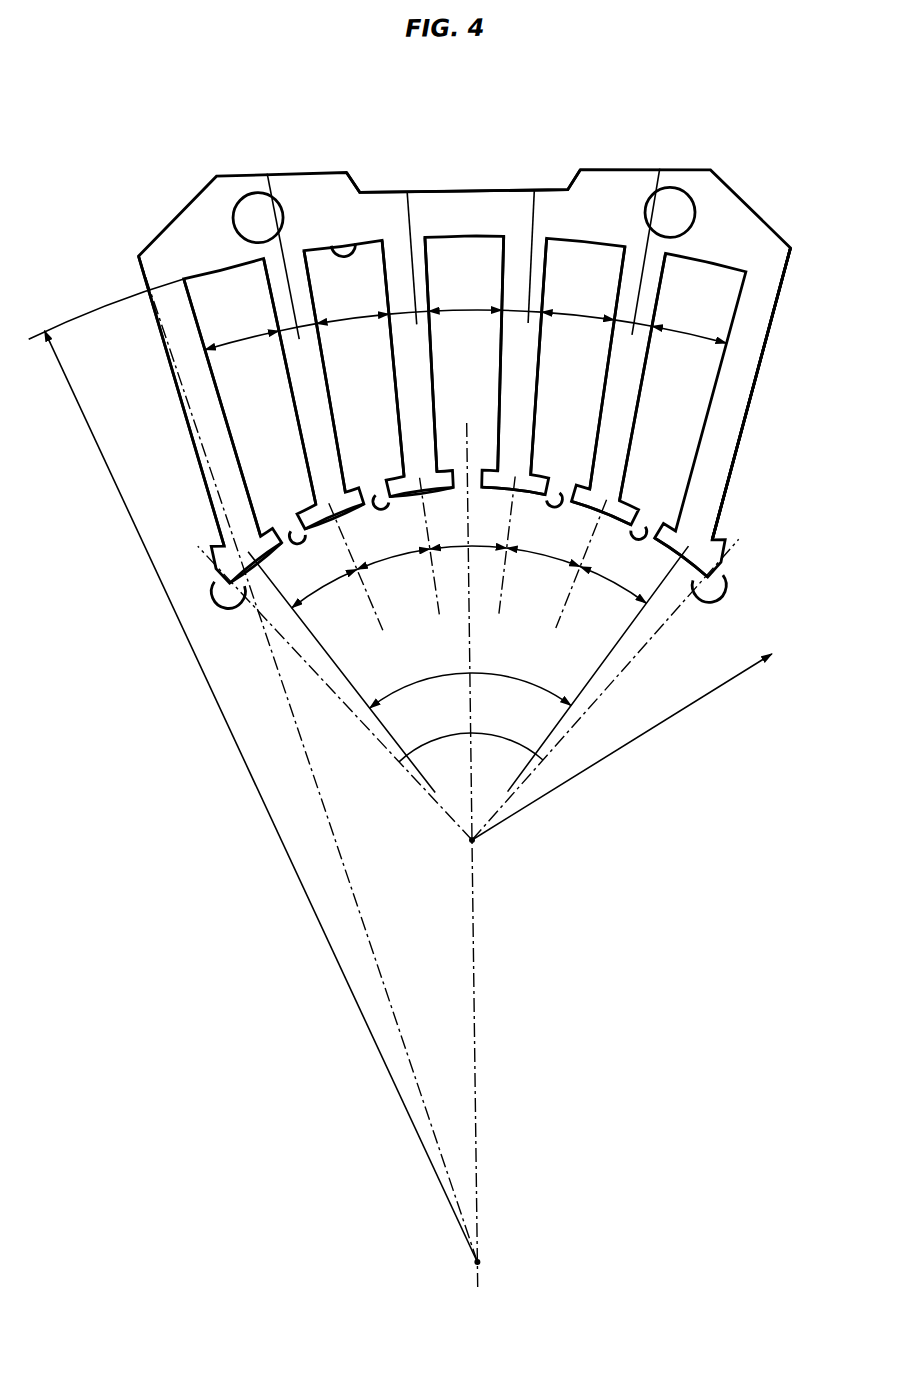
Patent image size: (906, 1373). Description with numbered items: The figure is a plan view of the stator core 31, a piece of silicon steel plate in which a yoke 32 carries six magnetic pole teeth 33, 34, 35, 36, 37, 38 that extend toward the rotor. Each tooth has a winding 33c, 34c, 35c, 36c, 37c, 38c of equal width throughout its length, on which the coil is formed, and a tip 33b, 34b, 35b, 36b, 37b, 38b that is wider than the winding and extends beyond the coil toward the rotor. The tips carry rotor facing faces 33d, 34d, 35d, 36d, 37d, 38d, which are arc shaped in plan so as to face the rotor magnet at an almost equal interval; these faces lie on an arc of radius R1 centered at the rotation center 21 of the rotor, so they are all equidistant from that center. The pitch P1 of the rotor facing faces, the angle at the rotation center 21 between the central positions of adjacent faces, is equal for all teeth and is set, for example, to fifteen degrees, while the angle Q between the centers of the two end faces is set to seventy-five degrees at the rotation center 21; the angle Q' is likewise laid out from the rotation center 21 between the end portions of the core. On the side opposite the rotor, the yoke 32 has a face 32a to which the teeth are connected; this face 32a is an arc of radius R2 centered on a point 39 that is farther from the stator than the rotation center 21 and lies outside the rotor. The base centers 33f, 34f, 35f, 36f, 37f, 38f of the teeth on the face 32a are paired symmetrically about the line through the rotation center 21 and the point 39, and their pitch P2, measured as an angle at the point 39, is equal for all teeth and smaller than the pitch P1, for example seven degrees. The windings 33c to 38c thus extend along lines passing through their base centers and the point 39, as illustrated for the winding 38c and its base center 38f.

The stator core 31 is at (465, 328).
The yoke 32 is at (463, 157).
The face of the yoke 32a is at (356, 187).
The magnetic pole tooth 33 is at (780, 393).
The tip 33b is at (737, 557).
The winding 33c is at (765, 394).
The rotor facing face 33d is at (752, 585).
The base center 33f is at (762, 358).
The magnetic pole tooth 34 is at (662, 377).
The tip 34b is at (632, 472).
The winding 34c is at (650, 368).
The rotor facing face 34d is at (657, 503).
The base center 34f is at (630, 214).
The magnetic pole tooth 35 is at (560, 356).
The tip 35b is at (536, 439).
The winding 35c is at (546, 353).
The rotor facing face 35d is at (567, 467).
The base center 35f is at (538, 234).
The magnetic pole tooth 36 is at (455, 354).
The tip 36b is at (395, 446).
The winding 36c is at (435, 357).
The rotor facing face 36d is at (365, 478).
The base center 36f is at (416, 234).
The magnetic pole tooth 37 is at (339, 371).
The tip 37b is at (303, 474).
The winding 37c is at (275, 382).
The rotor facing face 37d is at (276, 506).
The base center 37f is at (290, 228).
The magnetic pole tooth 38 is at (223, 407).
The tip 38b is at (220, 551).
The winding 38c is at (181, 401).
The rotor facing face 38d is at (225, 612).
The base center 38f is at (265, 755).
The rotation center 21 is at (472, 855).
The point 39 is at (523, 1256).
The pitch of the rotor facing faces P1 is at (469, 561).
The pitch of the base centers P2 is at (465, 316).
The angle between end rotor facing faces Q is at (470, 677).
The angle between segment end faces Q' is at (470, 735).
The radius of the rotor facing faces R1 is at (622, 747).
The radius of the yoke face R2 is at (252, 771).